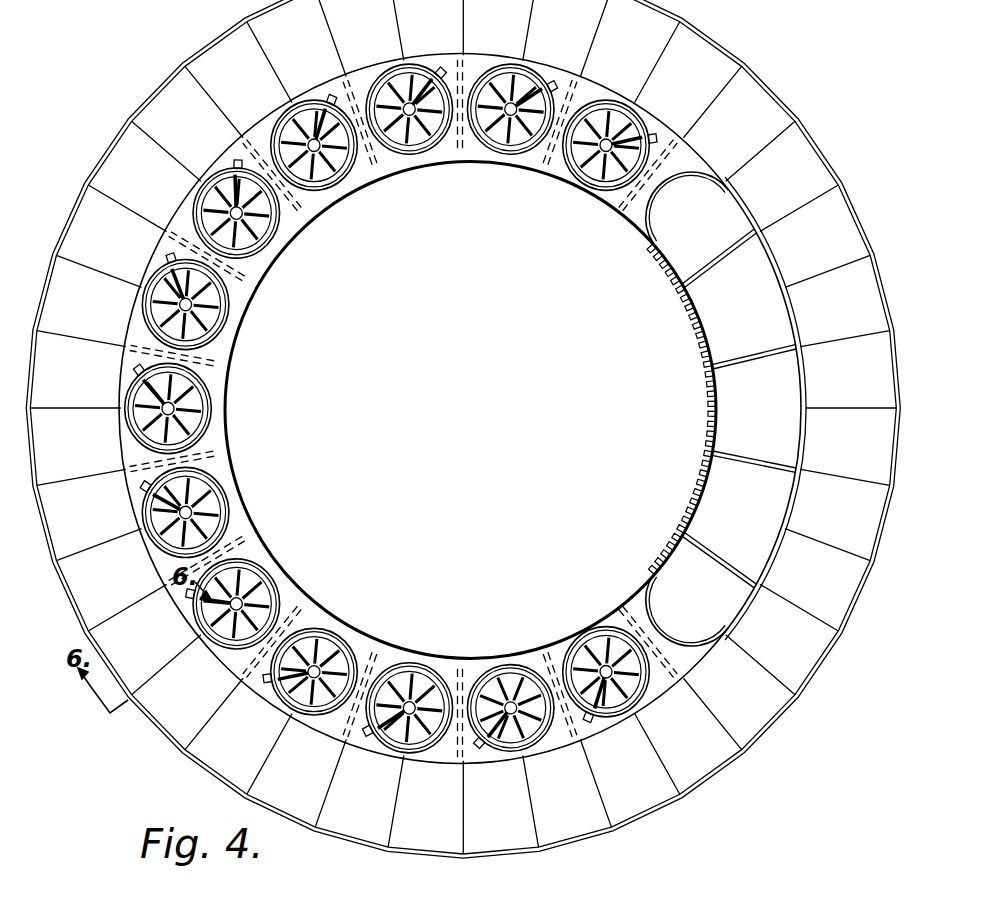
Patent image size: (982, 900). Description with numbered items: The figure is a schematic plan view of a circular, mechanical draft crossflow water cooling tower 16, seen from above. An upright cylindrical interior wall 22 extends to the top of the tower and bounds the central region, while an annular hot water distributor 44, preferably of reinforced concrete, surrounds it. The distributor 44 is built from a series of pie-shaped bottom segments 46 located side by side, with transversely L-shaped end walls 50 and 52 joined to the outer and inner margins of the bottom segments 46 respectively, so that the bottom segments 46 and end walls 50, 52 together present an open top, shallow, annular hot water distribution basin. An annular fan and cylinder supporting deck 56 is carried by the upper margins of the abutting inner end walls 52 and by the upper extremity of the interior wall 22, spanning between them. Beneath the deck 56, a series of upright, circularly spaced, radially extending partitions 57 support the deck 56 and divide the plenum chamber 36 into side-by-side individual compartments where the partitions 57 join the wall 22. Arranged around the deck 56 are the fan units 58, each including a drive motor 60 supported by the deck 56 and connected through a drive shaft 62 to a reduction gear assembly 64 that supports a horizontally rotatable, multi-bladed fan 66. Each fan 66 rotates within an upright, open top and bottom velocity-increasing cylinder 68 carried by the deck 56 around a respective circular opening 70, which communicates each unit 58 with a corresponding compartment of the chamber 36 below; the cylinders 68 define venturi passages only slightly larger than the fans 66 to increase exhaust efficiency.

The water cooling tower 16 is at (463, 429).
The interior wall 22 is at (690, 520).
The plenum chamber 36 is at (482, 410).
The hot water distributor 44 is at (782, 712).
The bottom segments 46 is at (848, 593).
The end wall 50 is at (829, 667).
The end wall 52 is at (802, 497).
The fan and cylinder supporting deck 56 is at (617, 614).
The partitions 57 is at (763, 463).
The fan units 58 is at (291, 572).
The drive motor 60 is at (266, 686).
The drive shaft 62 is at (300, 682).
The reduction gear assembly 64 is at (517, 714).
The fan 66 is at (513, 680).
The velocity-increasing cylinder 68 is at (528, 667).
The circular opening 70 is at (685, 626).